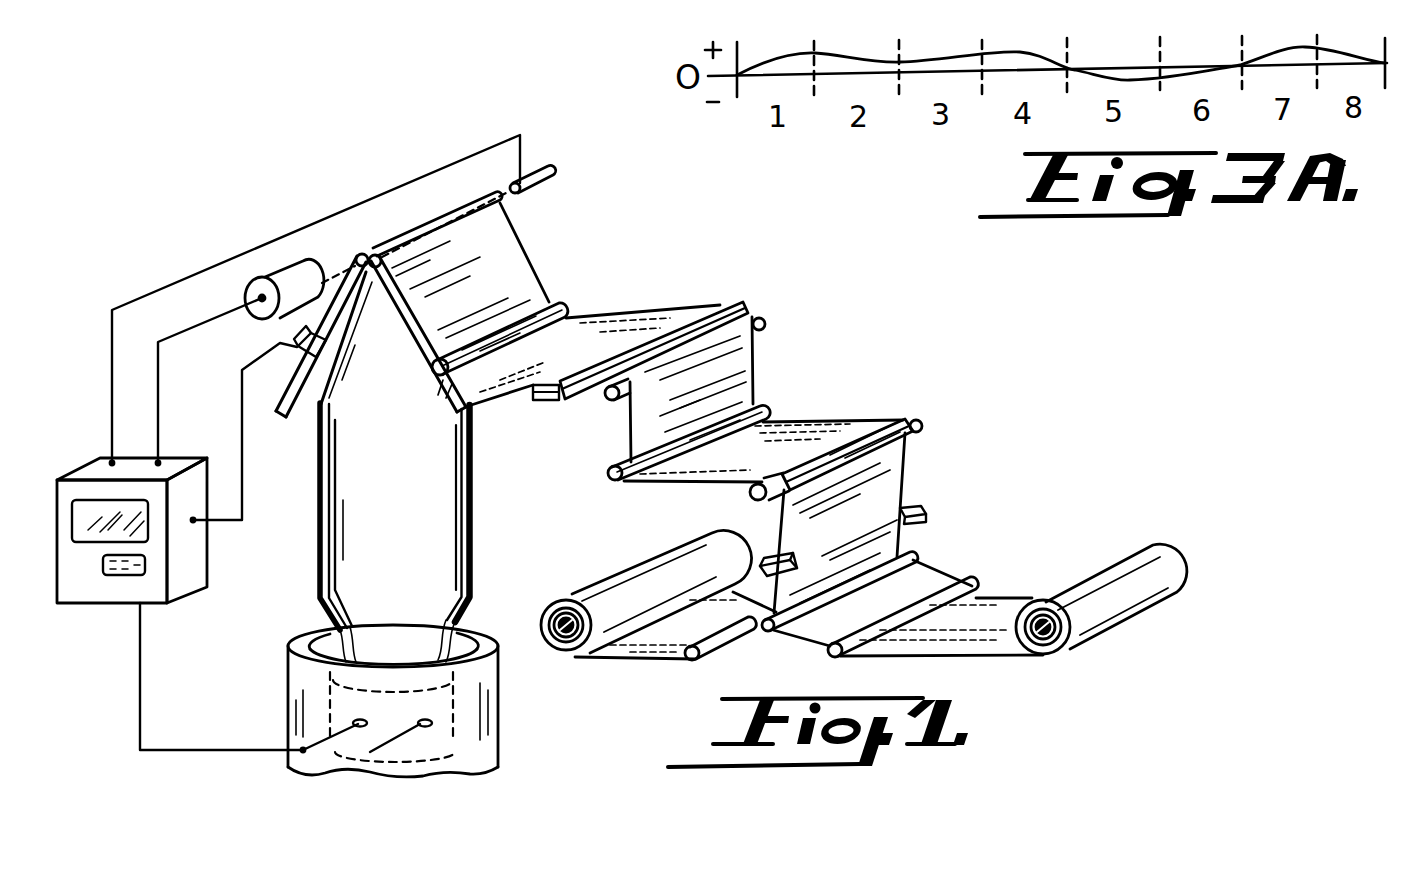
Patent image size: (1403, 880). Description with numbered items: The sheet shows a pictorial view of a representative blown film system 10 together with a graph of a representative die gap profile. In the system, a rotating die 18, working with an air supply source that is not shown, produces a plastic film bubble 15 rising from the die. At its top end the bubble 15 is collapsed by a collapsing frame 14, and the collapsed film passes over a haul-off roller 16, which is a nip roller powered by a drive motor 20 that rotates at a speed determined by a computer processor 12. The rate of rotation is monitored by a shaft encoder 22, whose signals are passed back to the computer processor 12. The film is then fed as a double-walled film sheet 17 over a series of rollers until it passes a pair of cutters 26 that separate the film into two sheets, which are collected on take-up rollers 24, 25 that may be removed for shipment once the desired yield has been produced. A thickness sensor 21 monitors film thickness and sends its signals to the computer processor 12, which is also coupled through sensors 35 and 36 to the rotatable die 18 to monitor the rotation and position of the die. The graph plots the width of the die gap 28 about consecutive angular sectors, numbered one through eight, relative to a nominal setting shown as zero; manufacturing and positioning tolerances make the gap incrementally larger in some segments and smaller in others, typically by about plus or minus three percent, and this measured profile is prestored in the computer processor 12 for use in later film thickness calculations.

In FIG. 1, the blown film system 10 is at (622, 469).
In FIG. 1, the computer processor 12 is at (132, 566).
In FIG. 1, the collapsing frame 14 is at (307, 396).
In FIG. 1, the plastic film bubble 15 is at (399, 484).
In FIG. 1, the haul-off roller 16 is at (366, 253).
In FIG. 1, the double-walled film sheet 17 is at (512, 268).
In FIG. 1, the rotating die 18 is at (502, 752).
In FIG. 1, the drive motor 20 is at (322, 274).
In FIG. 1, the thickness sensor 21 is at (318, 333).
In FIG. 1, the shaft encoder 22 is at (548, 180).
In FIG. 1, the take-up roller 24 is at (556, 603).
In FIG. 1, the take-up roller 25 is at (1043, 612).
In FIG. 1, the cutters 26 is at (764, 563).
In FIG. 3A, the die gap 28 is at (850, 56).
In FIG. 1, the sensor 35 is at (426, 728).
In FIG. 1, the sensor 36 is at (358, 728).